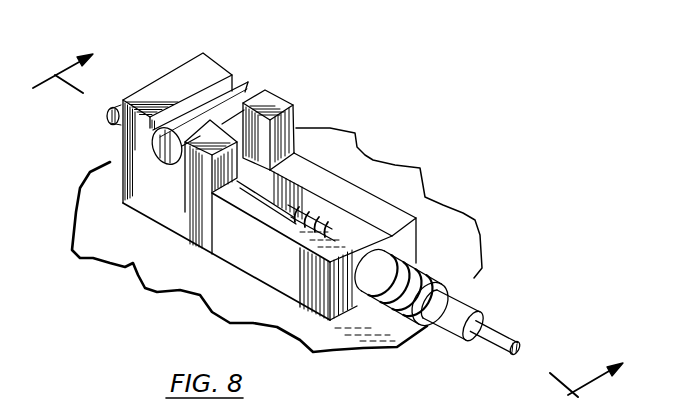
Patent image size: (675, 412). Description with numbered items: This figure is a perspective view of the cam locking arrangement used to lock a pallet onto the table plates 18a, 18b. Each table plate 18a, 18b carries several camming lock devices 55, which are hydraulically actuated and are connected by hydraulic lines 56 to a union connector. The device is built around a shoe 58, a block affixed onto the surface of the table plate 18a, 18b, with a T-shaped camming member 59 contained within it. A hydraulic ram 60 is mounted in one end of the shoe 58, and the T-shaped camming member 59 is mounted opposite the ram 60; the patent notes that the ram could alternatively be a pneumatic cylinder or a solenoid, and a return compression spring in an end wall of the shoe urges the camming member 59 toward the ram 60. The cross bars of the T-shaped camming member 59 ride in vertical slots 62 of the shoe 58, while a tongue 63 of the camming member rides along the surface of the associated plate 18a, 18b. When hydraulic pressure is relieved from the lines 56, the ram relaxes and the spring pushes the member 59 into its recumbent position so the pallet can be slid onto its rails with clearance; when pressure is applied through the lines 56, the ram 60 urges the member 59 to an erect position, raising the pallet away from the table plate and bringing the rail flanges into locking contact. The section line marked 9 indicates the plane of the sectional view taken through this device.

The section line 9- 9 is at (328, 227).
The table plate 18a is at (124, 274).
The table plate 18b is at (389, 203).
The camming lock device 55 is at (395, 112).
The hydraulic line 56 is at (500, 330).
The shoe 58 is at (212, 247).
The T-shaped camming member 59 is at (263, 178).
The hydraulic ram 60 is at (413, 279).
The vertical slot 62 is at (236, 73).
The tongue 63 is at (296, 129).